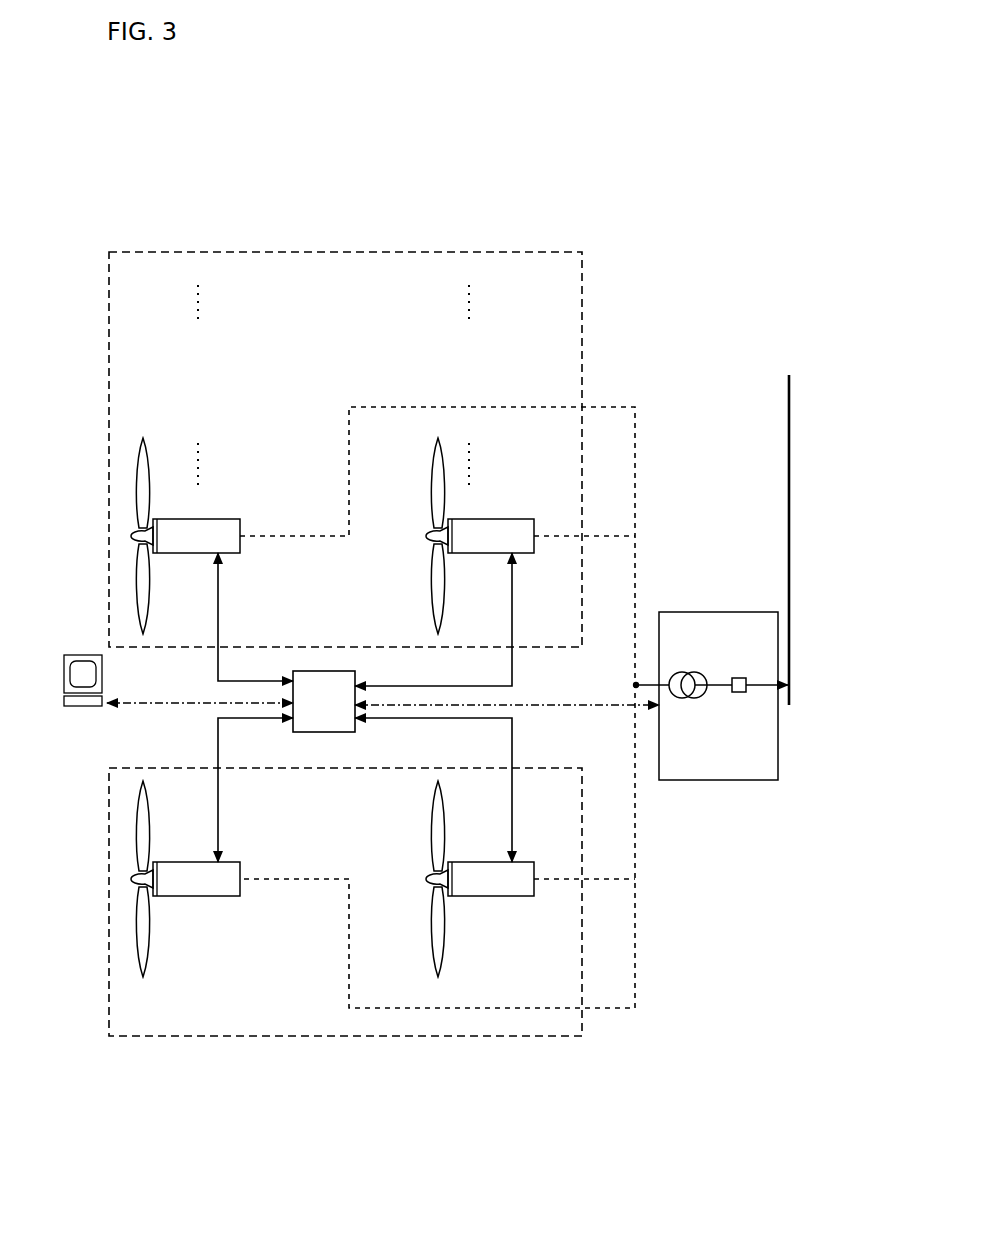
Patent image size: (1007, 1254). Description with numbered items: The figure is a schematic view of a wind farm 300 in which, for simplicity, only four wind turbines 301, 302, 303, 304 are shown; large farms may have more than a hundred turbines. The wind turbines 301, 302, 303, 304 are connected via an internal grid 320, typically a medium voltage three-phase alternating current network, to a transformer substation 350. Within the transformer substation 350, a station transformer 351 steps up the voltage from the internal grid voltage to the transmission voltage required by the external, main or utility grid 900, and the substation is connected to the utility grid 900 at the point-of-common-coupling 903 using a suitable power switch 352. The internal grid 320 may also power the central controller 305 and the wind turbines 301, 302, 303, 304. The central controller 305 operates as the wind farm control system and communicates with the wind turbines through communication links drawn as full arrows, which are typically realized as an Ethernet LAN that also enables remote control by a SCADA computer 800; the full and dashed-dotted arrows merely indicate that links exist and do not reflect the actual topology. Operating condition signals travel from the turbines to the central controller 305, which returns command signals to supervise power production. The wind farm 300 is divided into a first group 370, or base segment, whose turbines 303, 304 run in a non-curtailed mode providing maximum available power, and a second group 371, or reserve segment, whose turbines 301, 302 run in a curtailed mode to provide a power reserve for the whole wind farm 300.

The wind farm 300 is at (241, 168).
The first group of wind turbines 370 is at (170, 250).
The second group of wind turbines 371 is at (170, 1040).
The internal grid 320 is at (637, 434).
The wind turbine 301 is at (195, 919).
The wind turbine 302 is at (477, 913).
The wind turbine 303 is at (233, 502).
The wind turbine 304 is at (488, 493).
The central controller 305 is at (345, 712).
The SCADA computer 800 is at (80, 648).
The utility grid 900 is at (788, 566).
The transformer substation 350 is at (715, 696).
The station transformer 351 is at (680, 672).
The power switch 352 is at (740, 693).
The point-of-common-coupling 903 is at (784, 680).